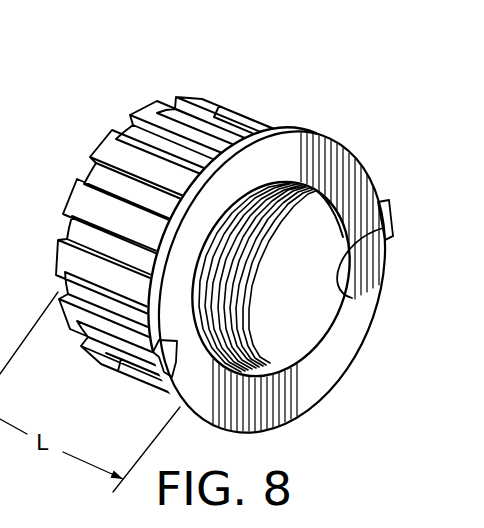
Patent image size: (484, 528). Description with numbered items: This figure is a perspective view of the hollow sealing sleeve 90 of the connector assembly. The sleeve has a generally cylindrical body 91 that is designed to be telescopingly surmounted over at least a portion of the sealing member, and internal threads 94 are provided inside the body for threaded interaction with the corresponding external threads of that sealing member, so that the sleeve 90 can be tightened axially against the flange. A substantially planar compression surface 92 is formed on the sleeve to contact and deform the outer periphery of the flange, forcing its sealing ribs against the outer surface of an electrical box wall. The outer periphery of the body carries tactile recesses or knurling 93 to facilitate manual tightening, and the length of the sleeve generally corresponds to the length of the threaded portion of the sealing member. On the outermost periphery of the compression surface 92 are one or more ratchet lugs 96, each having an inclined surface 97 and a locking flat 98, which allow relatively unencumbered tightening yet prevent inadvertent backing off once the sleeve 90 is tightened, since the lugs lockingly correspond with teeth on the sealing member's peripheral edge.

The sealing sleeve 90 is at (256, 97).
The cylindrical body 91 is at (215, 97).
The compression surface 92 is at (271, 151).
The knurling 93 is at (103, 177).
The internal threads 94 is at (267, 340).
The ratchet lugs 96 is at (392, 213).
The inclined surface 97 is at (360, 270).
The locking flat 98 is at (393, 238).